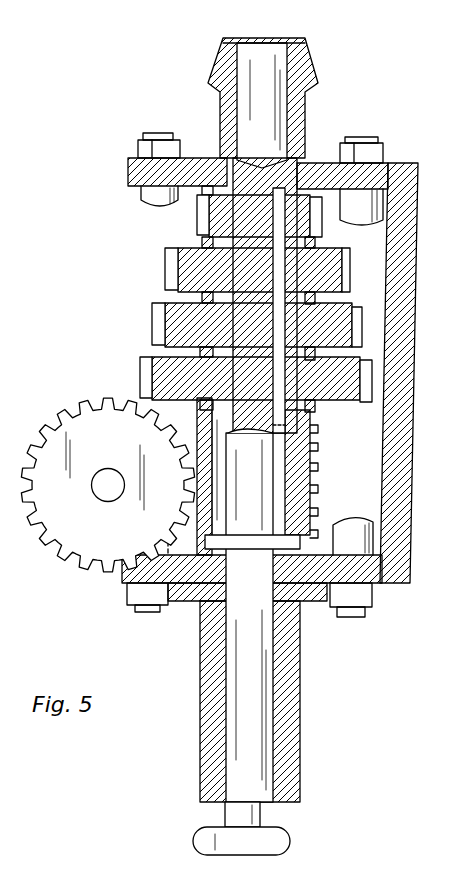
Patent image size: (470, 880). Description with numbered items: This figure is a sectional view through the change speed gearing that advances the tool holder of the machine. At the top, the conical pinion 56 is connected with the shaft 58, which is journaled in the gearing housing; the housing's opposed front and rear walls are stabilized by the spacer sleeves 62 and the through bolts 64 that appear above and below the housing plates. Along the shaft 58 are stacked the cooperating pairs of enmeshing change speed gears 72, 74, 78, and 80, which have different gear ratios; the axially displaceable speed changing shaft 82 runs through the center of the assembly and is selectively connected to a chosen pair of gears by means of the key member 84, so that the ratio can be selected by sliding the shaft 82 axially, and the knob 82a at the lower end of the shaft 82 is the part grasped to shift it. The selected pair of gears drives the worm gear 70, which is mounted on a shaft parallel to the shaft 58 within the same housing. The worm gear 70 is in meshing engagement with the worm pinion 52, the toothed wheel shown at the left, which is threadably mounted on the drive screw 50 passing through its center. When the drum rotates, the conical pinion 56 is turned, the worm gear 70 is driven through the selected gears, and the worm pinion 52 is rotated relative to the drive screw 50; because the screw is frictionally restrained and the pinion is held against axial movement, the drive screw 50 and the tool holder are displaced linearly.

The drive screw 50 is at (95, 492).
The worm pinion 52 is at (50, 420).
The conical pinion 56 is at (306, 52).
The shaft 58 is at (226, 156).
The spacer sleeve 62 is at (140, 195).
The through bolt 64 is at (152, 134).
The worm gear 70 is at (314, 464).
The change speed gear 72 is at (194, 214).
The change speed gear 74 is at (162, 259).
The change speed gear 78 is at (149, 319).
The change speed gear 80 is at (137, 363).
The speed changing shaft 82 is at (246, 434).
The knob 82a is at (196, 840).
The key member 84 is at (300, 206).